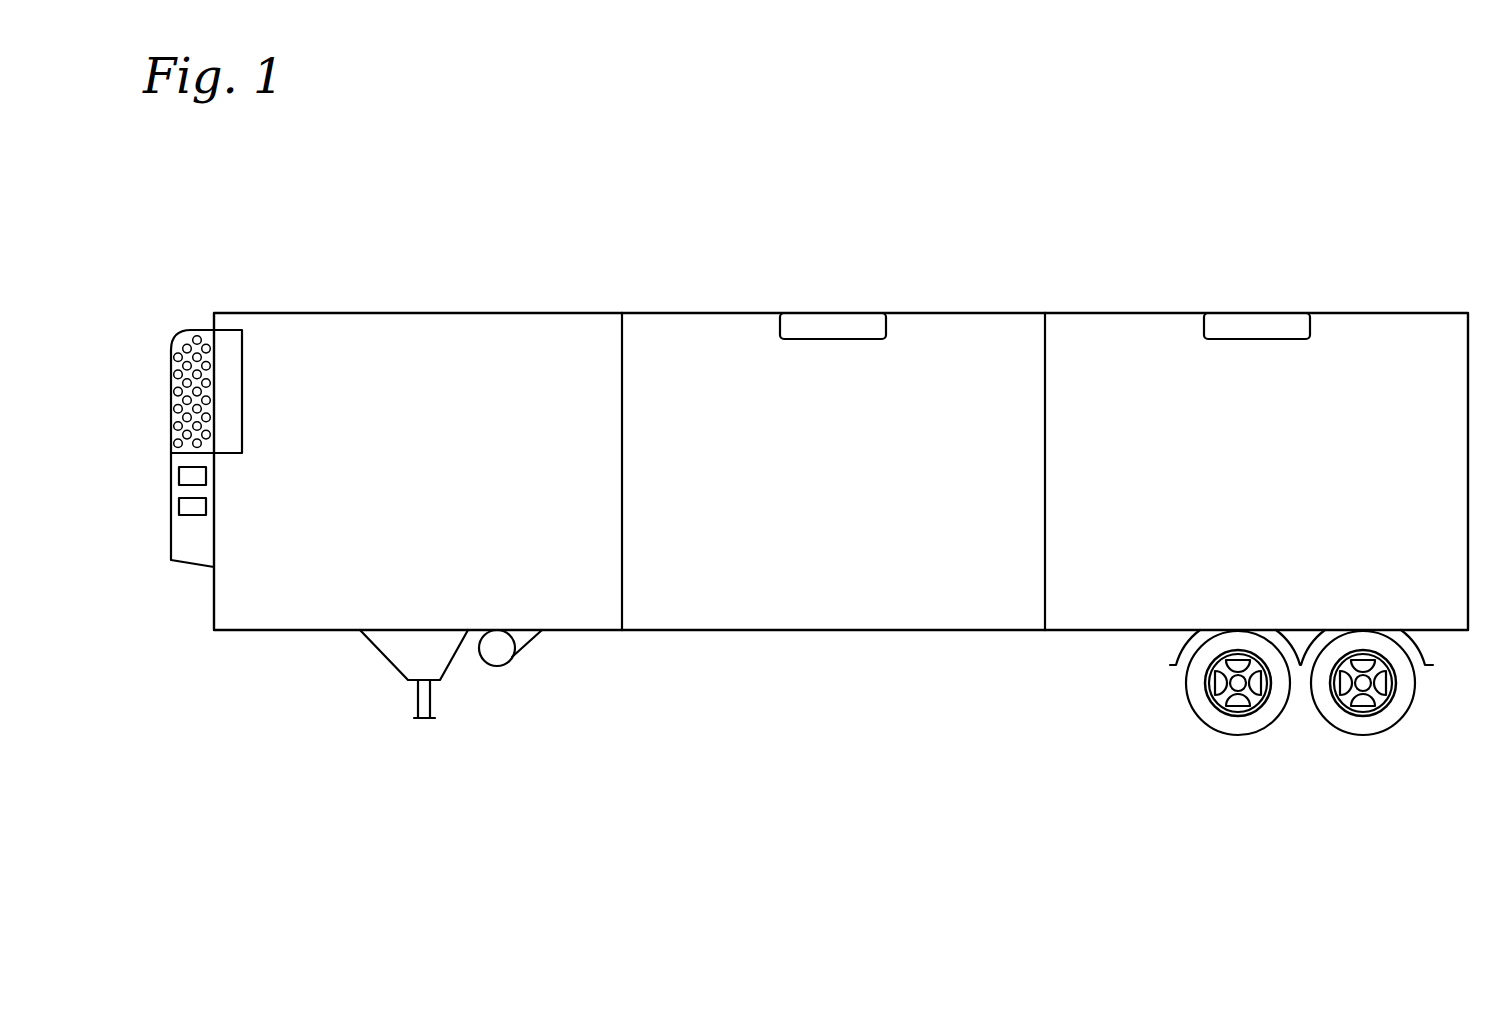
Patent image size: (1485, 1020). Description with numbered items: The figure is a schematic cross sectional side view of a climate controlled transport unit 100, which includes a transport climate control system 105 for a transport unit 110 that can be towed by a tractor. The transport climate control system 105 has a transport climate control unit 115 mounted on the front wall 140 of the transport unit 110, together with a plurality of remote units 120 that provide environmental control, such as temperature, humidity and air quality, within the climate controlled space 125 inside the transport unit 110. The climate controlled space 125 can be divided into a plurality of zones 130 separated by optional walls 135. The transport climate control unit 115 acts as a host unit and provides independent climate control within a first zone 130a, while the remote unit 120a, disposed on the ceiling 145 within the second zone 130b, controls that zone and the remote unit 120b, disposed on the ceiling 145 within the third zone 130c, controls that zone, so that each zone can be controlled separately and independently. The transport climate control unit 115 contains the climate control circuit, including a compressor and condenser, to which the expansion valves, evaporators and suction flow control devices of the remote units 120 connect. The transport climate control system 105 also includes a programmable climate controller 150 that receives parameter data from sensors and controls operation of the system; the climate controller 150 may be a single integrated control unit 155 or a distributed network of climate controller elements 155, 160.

The climate controlled transport unit 100 is at (560, 180).
The transport climate control system 105 is at (161, 295).
The transport unit 110 is at (1377, 313).
The transport climate control unit 115 is at (195, 565).
The remote units 120 is at (866, 276).
The remote unit 120a is at (828, 320).
The remote unit 120b is at (1238, 320).
The climate controlled space 125 is at (330, 605).
The zones 130 is at (357, 762).
The first zone 130a is at (402, 612).
The second zone 130b is at (882, 612).
The third zone 130c is at (1160, 613).
The walls 135 is at (622, 375).
The front wall 140 is at (214, 605).
The ceiling 145 is at (745, 313).
The climate controller 150 is at (150, 460).
The integrated control unit 155 is at (185, 488).
The climate controller element 160 is at (186, 520).